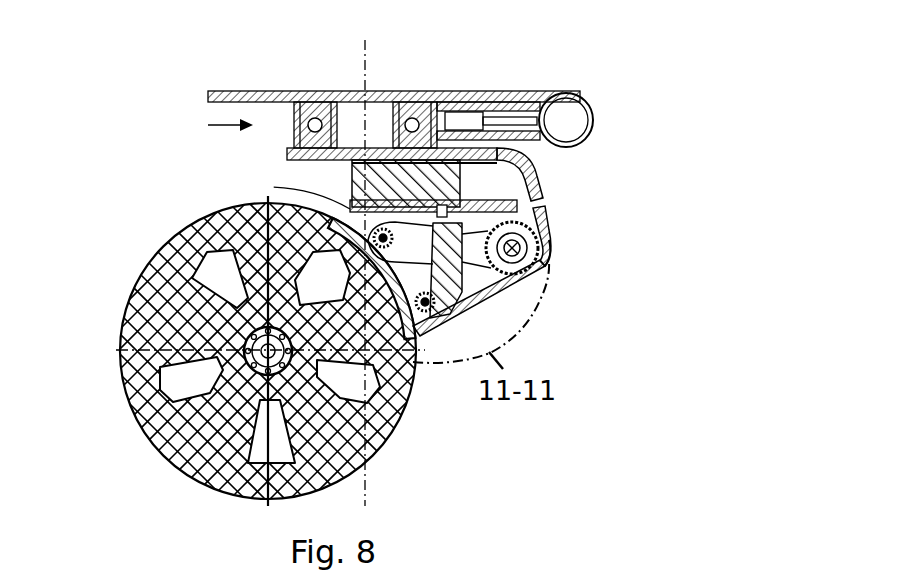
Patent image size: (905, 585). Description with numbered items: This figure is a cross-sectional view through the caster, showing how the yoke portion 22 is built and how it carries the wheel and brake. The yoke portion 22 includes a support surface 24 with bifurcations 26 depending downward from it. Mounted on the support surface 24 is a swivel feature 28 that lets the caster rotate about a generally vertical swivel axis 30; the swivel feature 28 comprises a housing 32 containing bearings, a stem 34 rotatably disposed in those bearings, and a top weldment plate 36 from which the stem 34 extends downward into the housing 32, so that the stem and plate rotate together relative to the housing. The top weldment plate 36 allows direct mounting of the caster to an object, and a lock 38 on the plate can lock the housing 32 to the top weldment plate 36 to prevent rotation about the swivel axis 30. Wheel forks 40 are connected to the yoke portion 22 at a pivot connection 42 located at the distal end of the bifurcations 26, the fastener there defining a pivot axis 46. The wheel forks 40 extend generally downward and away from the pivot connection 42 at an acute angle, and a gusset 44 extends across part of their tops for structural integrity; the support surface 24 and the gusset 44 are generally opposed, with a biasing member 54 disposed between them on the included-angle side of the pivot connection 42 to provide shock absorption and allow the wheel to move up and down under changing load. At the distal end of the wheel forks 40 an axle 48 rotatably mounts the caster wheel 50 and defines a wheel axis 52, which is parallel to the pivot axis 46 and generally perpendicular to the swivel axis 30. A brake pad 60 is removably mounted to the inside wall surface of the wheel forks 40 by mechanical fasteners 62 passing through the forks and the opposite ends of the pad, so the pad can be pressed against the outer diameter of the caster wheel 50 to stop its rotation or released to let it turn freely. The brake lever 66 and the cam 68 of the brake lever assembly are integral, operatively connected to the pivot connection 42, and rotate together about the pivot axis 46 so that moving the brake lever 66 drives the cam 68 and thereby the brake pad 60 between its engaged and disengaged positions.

The yoke portion 22 is at (533, 202).
The support surface 24 is at (287, 150).
The bifurcations 26 is at (513, 170).
The swivel feature 28 is at (216, 126).
The swivel axis 30 is at (270, 268).
The housing 32 is at (298, 120).
The stem 34 is at (330, 90).
The top weldment plate 36 is at (210, 95).
The lock 38 is at (594, 112).
The wheel forks 40 is at (520, 284).
The pivot connection 42 is at (530, 232).
The gusset 44 is at (352, 203).
The pivot axis 46 is at (543, 262).
The axle 48 is at (205, 310).
The caster wheel 50 is at (125, 310).
The wheel axis 52 is at (244, 357).
The biasing member 54 is at (355, 182).
The brake pad 60 is at (430, 244).
The mechanical fasteners 62 is at (413, 334).
The brake lever 66 is at (443, 311).
The cam 68 is at (465, 285).